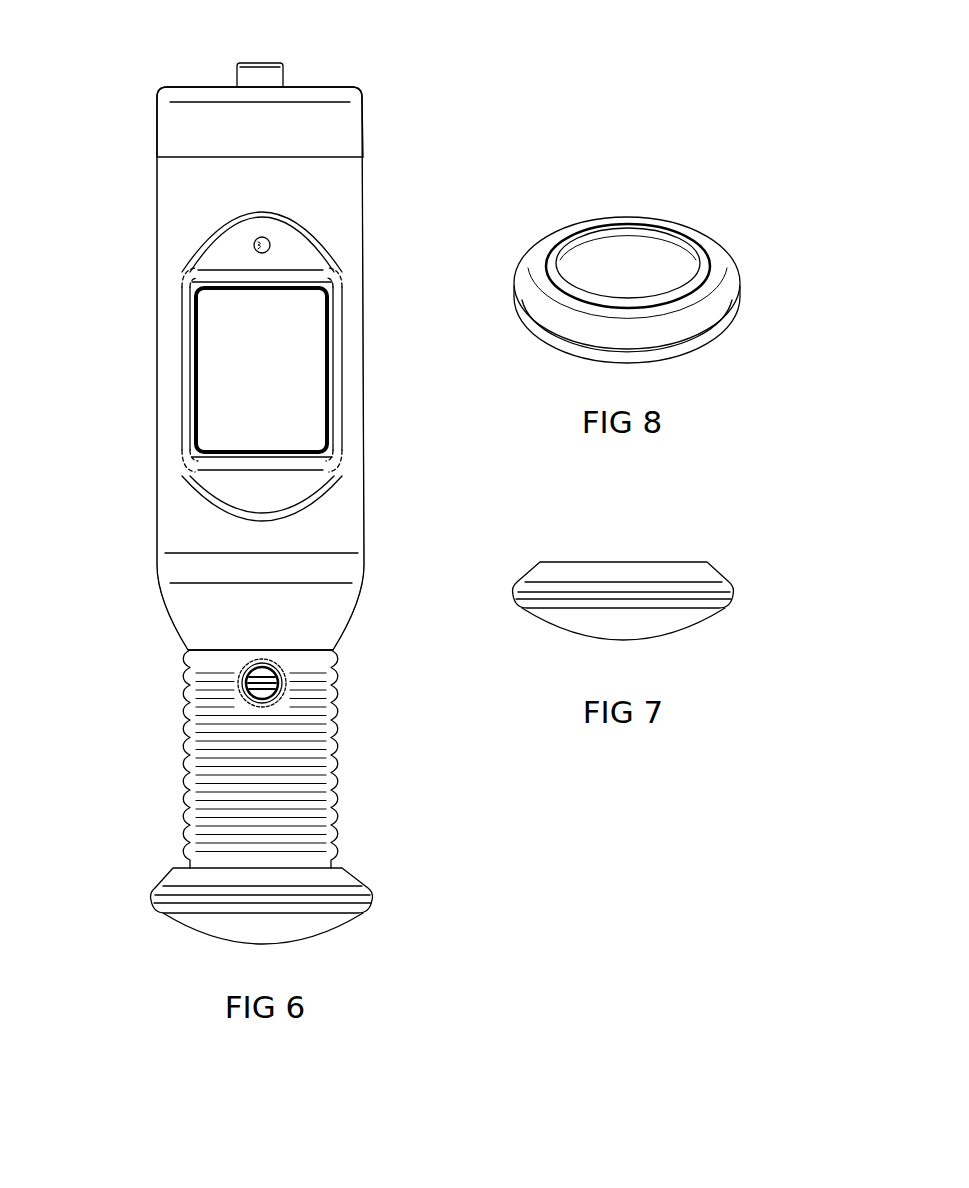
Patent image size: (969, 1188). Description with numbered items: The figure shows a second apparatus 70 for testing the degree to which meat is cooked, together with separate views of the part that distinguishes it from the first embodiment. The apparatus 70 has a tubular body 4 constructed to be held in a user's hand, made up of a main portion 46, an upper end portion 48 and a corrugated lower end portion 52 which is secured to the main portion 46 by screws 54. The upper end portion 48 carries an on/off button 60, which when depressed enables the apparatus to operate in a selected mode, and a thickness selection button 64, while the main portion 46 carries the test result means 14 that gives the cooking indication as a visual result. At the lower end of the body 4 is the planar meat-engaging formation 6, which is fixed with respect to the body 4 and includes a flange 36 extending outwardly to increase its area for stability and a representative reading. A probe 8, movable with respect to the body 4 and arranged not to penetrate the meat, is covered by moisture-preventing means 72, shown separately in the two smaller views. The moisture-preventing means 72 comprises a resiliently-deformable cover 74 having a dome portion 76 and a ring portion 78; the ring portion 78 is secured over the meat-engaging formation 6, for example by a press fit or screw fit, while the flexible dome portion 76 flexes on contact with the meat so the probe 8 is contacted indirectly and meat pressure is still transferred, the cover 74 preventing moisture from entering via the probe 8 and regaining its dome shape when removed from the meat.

In FIG. 6, the body 4 is at (367, 367).
In FIG. 6, the meat-engaging formation 6 is at (148, 908).
In FIG. 6, the probe 8 is at (220, 925).
In FIG. 6, the test result means 14 is at (193, 397).
In FIG. 6, the flange 36 is at (167, 883).
In FIG. 6, the main portion 46 is at (340, 210).
In FIG. 6, the end portion 48 is at (343, 137).
In FIG. 6, the end portion 52 is at (338, 750).
In FIG. 6, the screws 54 is at (282, 673).
In FIG. 6, the on/off button 60 is at (268, 76).
In FIG. 6, the thickness selection button 64 is at (253, 243).
In FIG. 6, the second apparatus 70 is at (452, 63).
In FIG. 6, the moisture-preventing means 72 is at (332, 930).
In FIG. 6, the resiliently-deformable cover 74 is at (307, 938).
In FIG. 6, the dome portion 76 is at (232, 933).
In FIG. 8, the dome portion 76 is at (628, 266).
In FIG. 7, the dome portion 76 is at (672, 622).
In FIG. 6, the ring portion 78 is at (357, 882).
In FIG. 8, the ring portion 78 is at (713, 295).
In FIG. 7, the ring portion 78 is at (720, 573).